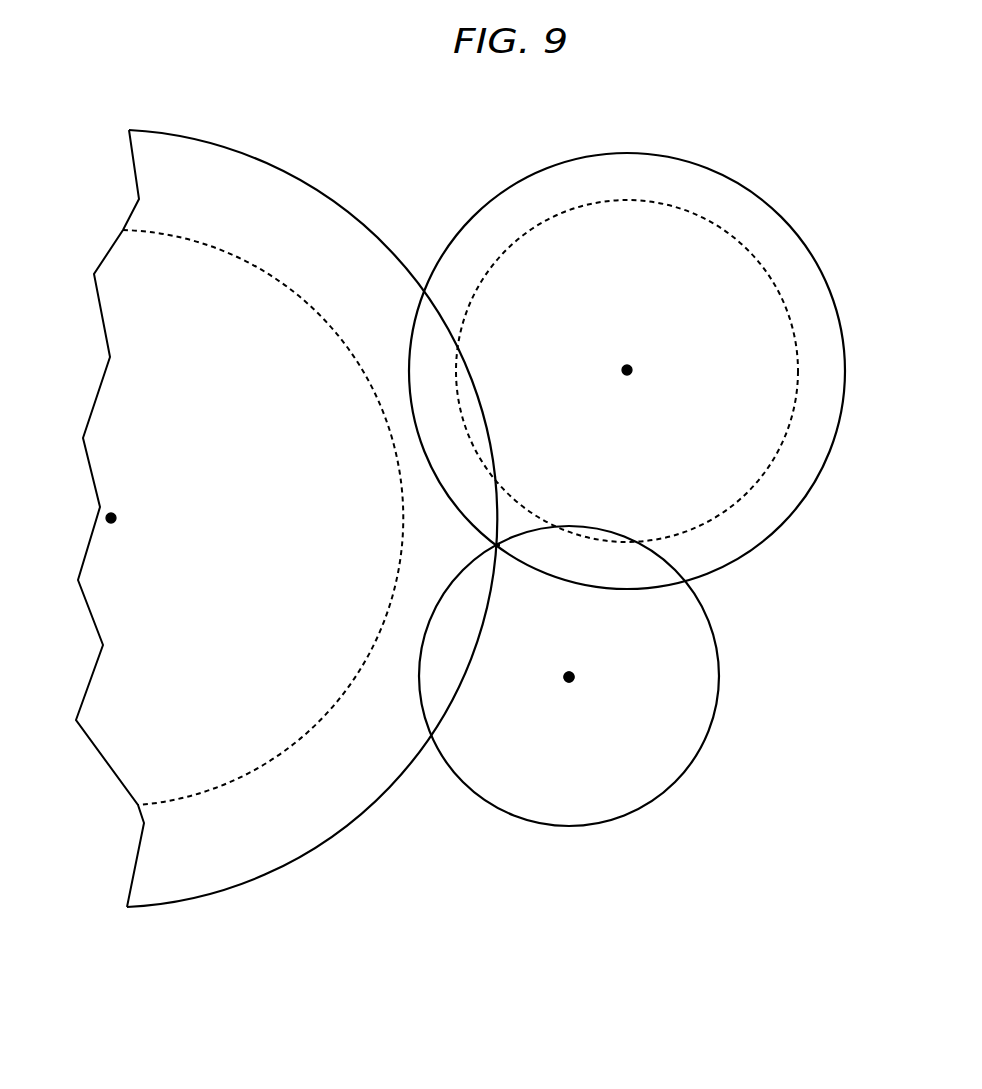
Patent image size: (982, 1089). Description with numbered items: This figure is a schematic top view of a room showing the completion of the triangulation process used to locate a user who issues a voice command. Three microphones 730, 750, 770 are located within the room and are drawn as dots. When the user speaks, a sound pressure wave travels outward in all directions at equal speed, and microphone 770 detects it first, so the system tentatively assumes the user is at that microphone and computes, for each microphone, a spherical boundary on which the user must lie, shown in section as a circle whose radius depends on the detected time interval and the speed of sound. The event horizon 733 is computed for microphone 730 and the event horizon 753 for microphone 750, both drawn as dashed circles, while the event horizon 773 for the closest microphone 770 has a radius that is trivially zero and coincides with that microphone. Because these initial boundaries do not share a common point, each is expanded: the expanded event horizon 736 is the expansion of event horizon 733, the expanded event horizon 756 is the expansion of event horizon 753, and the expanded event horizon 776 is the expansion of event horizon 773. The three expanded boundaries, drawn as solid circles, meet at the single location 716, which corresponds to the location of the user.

The single location 716 is at (492, 543).
The microphone 730 is at (116, 516).
The event horizon 733 is at (215, 248).
The expanded event horizon 736 is at (252, 153).
The microphone 750 is at (633, 369).
The event horizon 753 is at (790, 412).
The expanded event horizon 756 is at (808, 490).
The microphone 770 is at (575, 680).
The event horizon 773 is at (575, 680).
The expanded event horizon 776 is at (710, 613).